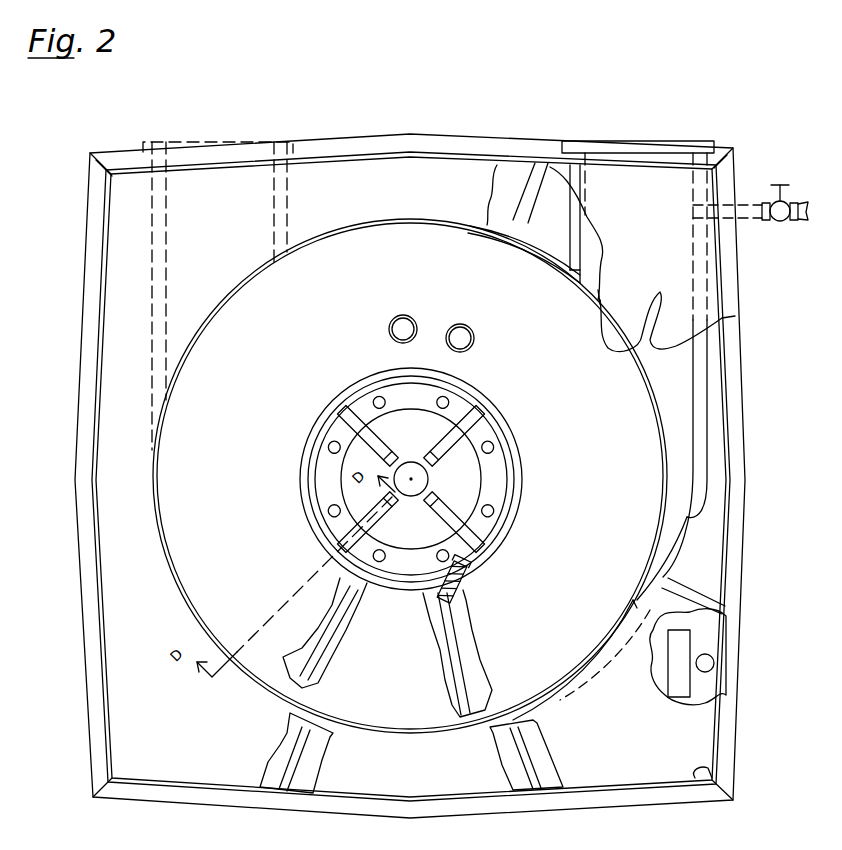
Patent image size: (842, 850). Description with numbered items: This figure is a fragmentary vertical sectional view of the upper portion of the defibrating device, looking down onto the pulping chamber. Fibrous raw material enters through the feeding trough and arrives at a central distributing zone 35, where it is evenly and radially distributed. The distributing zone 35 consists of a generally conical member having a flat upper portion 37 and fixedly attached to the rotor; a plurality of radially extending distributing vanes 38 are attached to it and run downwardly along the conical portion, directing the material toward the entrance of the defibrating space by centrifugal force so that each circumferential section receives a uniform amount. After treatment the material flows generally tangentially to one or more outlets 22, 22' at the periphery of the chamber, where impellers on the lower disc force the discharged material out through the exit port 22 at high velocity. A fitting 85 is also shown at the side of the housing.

The outlet 22 is at (691, 297).
The outlet 22' is at (218, 277).
The drain valve 85 is at (740, 198).
The distributing vane 38 is at (472, 428).
The distributing zone 35 is at (473, 488).
The flat upper portion 37 is at (465, 518).